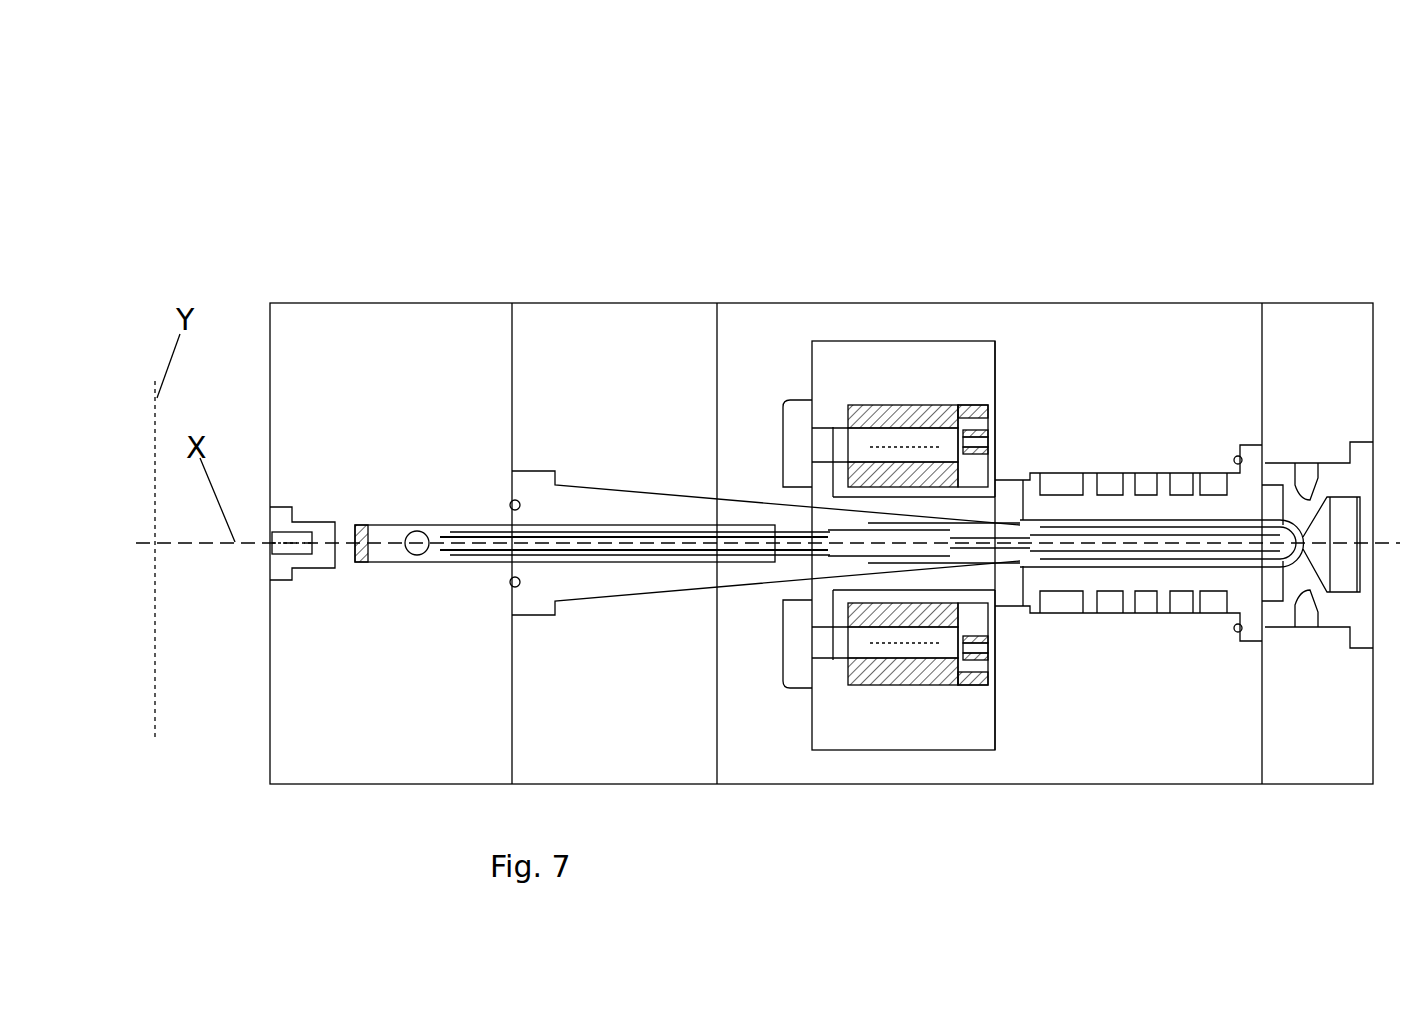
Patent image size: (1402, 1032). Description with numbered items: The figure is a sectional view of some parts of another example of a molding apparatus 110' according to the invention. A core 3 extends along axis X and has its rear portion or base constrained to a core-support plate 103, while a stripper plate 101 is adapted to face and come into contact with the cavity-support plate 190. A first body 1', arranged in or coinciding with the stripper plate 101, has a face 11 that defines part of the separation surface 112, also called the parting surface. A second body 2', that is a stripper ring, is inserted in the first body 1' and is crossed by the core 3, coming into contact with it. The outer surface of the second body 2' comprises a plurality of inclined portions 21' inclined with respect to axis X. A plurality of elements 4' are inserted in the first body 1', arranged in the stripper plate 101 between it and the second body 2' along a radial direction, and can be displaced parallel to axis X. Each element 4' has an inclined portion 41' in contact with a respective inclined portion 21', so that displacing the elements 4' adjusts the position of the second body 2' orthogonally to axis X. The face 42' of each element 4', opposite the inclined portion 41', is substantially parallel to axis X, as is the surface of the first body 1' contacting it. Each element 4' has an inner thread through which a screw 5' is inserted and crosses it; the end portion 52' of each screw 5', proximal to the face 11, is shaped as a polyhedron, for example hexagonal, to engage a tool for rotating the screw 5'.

The molding apparatus 110' is at (821, 468).
The core-support plate 103 is at (662, 367).
The stripper plate 101 is at (762, 368).
The second body 2' is at (858, 706).
The separation surface 112 is at (993, 697).
The face 42' is at (918, 473).
The inclined portion 41' is at (962, 516).
The screw 5' is at (903, 540).
The element 4' is at (1017, 542).
The end portion 52' is at (1128, 530).
The face 11 is at (985, 447).
The first body 1' is at (1006, 420).
The inclined portion 21' is at (1021, 513).
The core 3 is at (1278, 557).
The cavity-support plate 190 is at (1173, 347).